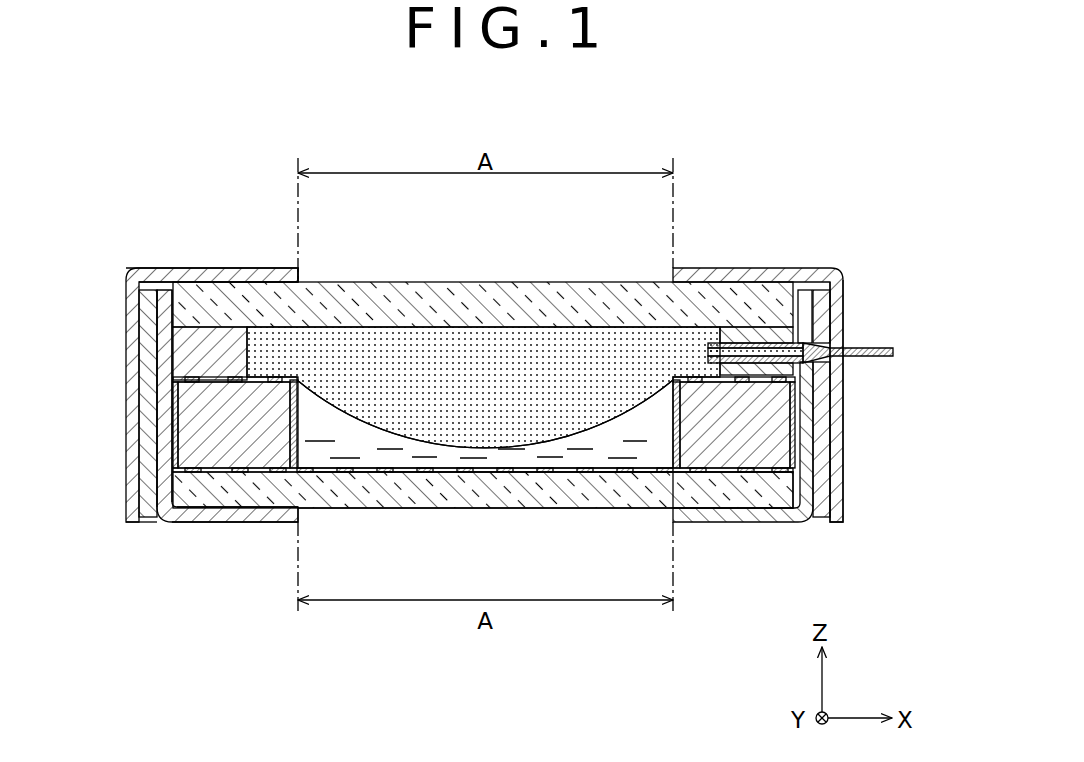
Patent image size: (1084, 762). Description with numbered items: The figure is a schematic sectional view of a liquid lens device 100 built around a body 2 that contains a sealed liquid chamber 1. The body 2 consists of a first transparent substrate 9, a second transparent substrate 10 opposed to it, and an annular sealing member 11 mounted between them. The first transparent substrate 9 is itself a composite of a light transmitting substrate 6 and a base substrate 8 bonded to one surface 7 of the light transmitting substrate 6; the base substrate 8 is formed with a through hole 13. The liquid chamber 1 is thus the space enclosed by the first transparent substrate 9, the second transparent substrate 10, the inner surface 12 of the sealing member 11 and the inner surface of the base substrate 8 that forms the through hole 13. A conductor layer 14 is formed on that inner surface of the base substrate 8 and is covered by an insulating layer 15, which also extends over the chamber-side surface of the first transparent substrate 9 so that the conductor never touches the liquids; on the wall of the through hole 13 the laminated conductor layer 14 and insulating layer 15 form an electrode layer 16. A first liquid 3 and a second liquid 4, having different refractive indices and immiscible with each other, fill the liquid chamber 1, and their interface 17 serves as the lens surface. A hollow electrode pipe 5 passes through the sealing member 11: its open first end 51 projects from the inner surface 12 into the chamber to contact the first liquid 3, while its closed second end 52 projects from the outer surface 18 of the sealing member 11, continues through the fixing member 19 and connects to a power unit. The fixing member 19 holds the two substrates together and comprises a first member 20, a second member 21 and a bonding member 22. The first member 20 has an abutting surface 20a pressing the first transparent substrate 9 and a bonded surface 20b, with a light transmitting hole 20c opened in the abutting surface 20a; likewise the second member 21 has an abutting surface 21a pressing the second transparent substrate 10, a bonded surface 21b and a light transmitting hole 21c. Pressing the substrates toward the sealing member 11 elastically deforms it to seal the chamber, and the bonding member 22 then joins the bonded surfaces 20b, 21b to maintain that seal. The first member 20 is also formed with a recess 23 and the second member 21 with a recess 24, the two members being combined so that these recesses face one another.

The liquid lens device 100 is at (603, 162).
The liquid chamber 1 is at (625, 462).
The body 2 is at (403, 276).
The first liquid 3 is at (598, 328).
The second liquid 4 is at (510, 463).
The hollow electrode pipe 5 is at (890, 348).
The light transmitting substrate 6 is at (398, 500).
The one surface 7 is at (473, 463).
The base substrate 8 is at (747, 460).
The first transparent substrate 9 is at (372, 512).
The second transparent substrate 10 is at (453, 293).
The annular sealing member 11 is at (775, 332).
The inner surface 12 is at (717, 340).
The through hole 13 is at (290, 447).
The conductor layer 14 is at (702, 473).
The insulating layer 15 is at (648, 463).
The electrode layer 16 is at (663, 423).
The interface (lens surface) 17 is at (453, 447).
The outer surface 18 is at (796, 333).
The fixing member 19 is at (124, 484).
The first member 20 is at (188, 523).
The abutting surface 20a is at (226, 508).
The bonded surface 20b is at (158, 438).
The light transmitting hole 20c is at (299, 523).
The second member 21 is at (137, 268).
The abutting surface 21a is at (217, 293).
The bonded surface 21b is at (140, 382).
The light transmitting hole 21c is at (300, 277).
The bonding member 22 is at (148, 523).
The recess 23 is at (803, 296).
The recess 24 is at (840, 499).
The first end 51 is at (710, 343).
The second end 52 is at (893, 357).